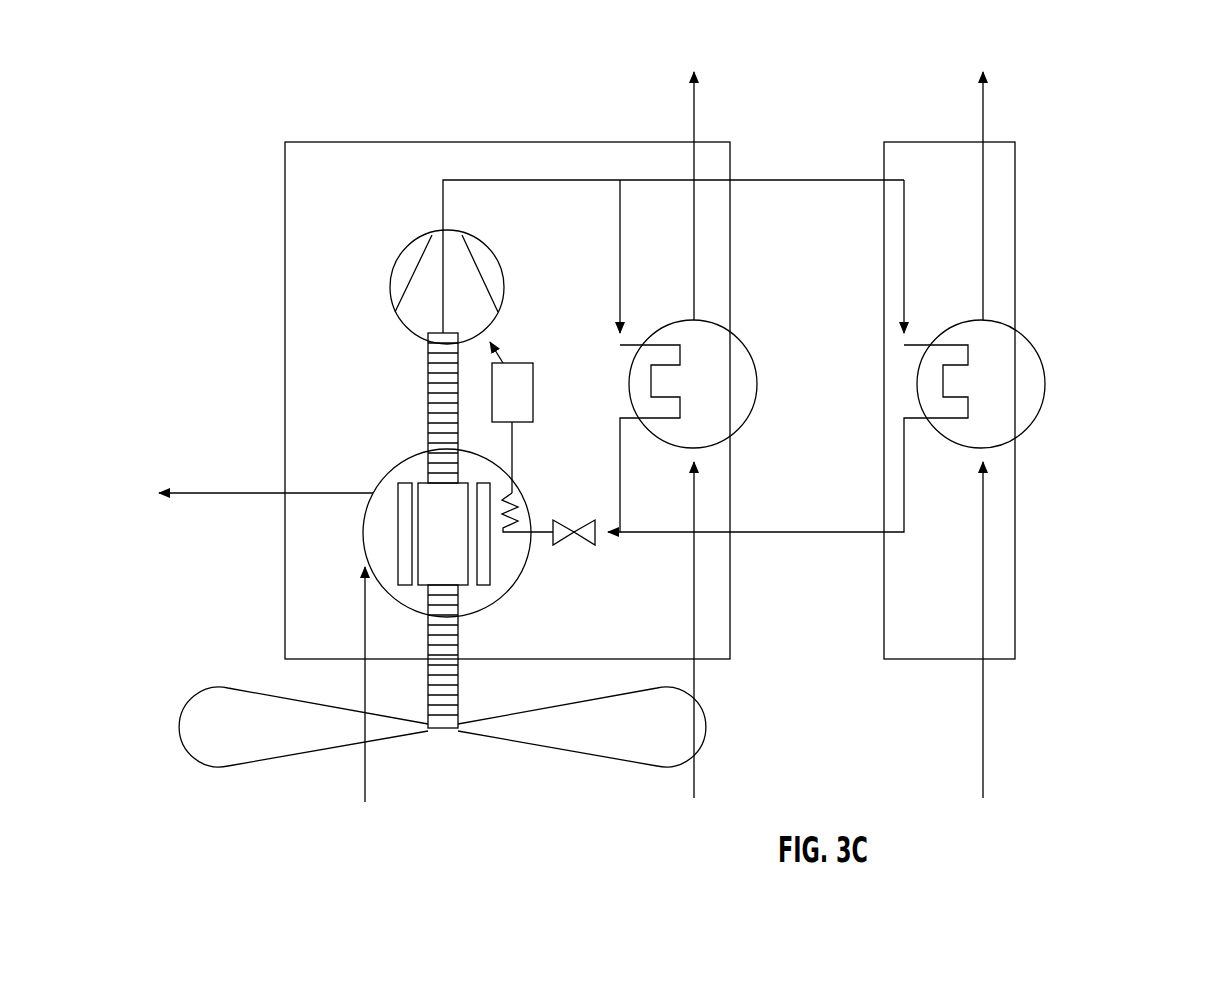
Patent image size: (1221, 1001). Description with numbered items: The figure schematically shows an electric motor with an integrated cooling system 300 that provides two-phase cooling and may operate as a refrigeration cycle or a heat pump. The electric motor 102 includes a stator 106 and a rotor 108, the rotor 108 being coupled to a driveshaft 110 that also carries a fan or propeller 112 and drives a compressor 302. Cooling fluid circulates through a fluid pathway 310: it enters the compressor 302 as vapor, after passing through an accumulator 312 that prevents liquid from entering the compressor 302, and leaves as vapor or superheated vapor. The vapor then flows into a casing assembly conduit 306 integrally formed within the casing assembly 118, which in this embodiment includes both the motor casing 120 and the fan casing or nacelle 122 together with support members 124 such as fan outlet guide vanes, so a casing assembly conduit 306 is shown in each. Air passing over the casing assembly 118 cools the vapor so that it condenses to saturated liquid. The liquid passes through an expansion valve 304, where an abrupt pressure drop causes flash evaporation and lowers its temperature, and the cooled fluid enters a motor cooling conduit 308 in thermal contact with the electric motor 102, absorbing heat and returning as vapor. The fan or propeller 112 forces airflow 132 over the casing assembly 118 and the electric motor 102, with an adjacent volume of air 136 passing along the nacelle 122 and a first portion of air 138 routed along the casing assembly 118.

The integrated cooling system 300 is at (1095, 75).
The compressor 302 is at (400, 252).
The expansion valve 304 is at (580, 540).
The casing assembly conduit 306 is at (758, 378).
The motor cooling conduit 308 is at (528, 508).
The fluid pathway 310 is at (536, 178).
The accumulator 312 is at (534, 372).
The electric motor 102 is at (460, 530).
The stator 106 is at (492, 553).
The rotor 108 is at (480, 605).
The driveshaft 110 is at (427, 422).
The fan or propeller 112 is at (543, 779).
The casing assembly 118 is at (737, 400).
The motor casing 120 is at (731, 237).
The fan casing or nacelle 122 is at (1016, 237).
The support members 124 is at (794, 356).
The airflow 132 is at (366, 773).
The volume of air 136 is at (696, 682).
The first portion of air 138 is at (224, 488).